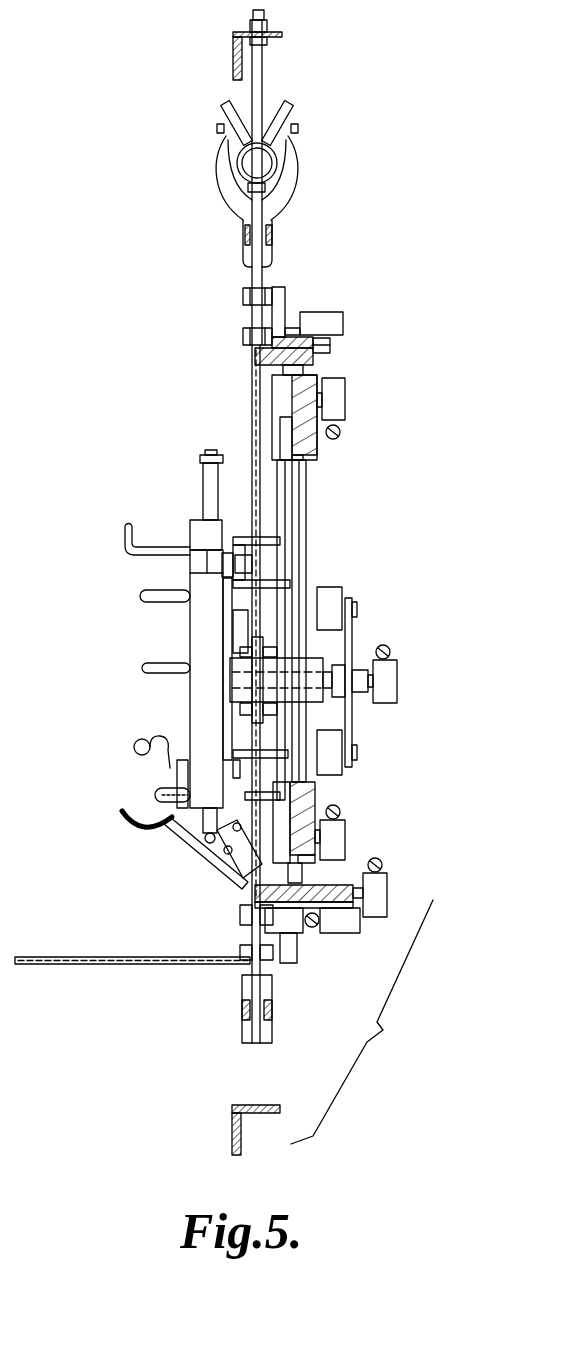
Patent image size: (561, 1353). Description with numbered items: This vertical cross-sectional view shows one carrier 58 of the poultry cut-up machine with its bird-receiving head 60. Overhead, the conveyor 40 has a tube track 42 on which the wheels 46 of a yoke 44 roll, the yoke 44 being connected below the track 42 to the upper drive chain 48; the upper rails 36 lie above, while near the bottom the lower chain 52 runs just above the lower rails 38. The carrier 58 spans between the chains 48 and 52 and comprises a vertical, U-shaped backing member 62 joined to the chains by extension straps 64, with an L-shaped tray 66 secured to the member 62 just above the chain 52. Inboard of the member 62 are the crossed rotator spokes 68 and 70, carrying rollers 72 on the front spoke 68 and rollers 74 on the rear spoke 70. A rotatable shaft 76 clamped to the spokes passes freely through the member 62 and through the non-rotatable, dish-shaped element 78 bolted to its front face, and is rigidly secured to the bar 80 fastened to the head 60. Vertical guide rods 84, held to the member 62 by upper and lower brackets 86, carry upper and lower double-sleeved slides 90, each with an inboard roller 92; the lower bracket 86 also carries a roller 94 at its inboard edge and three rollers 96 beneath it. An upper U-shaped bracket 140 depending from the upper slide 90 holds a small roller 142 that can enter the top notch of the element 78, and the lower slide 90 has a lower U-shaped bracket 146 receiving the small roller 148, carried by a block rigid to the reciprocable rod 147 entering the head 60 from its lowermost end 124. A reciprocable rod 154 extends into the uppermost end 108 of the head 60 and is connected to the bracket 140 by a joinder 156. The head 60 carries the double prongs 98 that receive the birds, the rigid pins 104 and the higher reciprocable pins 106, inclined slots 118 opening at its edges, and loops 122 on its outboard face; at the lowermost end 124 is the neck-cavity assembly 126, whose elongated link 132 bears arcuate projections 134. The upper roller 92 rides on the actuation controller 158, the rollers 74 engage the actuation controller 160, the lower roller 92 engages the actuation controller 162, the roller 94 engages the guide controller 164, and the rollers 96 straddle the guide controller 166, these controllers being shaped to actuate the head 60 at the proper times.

The upper longitudinal rails 36 is at (233, 45).
The lower longitudinal rails 38 is at (232, 1125).
The overhead conveyor 40 is at (318, 143).
The tube track 42 is at (238, 158).
The yoke 44 is at (288, 193).
The wheels 46 is at (240, 112).
The upper drive chain 48 is at (243, 237).
The lower chain 52 is at (242, 1012).
The carrier 58 is at (243, 367).
The bird-receiving head 60 is at (180, 651).
The backing member 62 is at (277, 307).
The extension straps 64 is at (267, 280).
The tray 66 is at (100, 965).
The front rotator spoke 68 is at (353, 622).
The rear rotator spoke 70 is at (355, 705).
The rollers 72 is at (340, 588).
The rollers 74 is at (397, 690).
The rotatable shaft 76 is at (330, 667).
The dish-shaped element 78 is at (248, 620).
The elongated bar 80 is at (225, 718).
The vertical guide rods 84 is at (299, 477).
The brackets 86 is at (315, 363).
The double-sleeved slides 90 is at (275, 402).
The roller 92 is at (343, 390).
The roller 94 is at (377, 917).
The rollers 96 is at (293, 933).
The double prongs 98 is at (125, 542).
The rigid pins 104 is at (142, 668).
The reciprocable pins 106 is at (140, 598).
The uppermost end 108 is at (190, 522).
The inclined slots 118 is at (203, 755).
The loop 122 is at (137, 748).
The lowermost end 124 is at (200, 815).
The assembly 126 is at (206, 883).
The elongated link 132 is at (192, 838).
The arcuate projections 134 is at (132, 826).
The upper U-shaped bracket 140 is at (285, 507).
The upper roller 142 is at (229, 555).
The lower U-shaped bracket 146 is at (287, 763).
The reciprocable rod 147 is at (203, 828).
The lower roller 148 is at (223, 718).
The reciprocable rod 154 is at (203, 478).
The joinder 156 is at (203, 457).
The actuation controller 158 is at (342, 430).
The actuation controller 160 is at (387, 648).
The actuation controller 162 is at (342, 810).
The guide controller 164 is at (382, 866).
The guide controller 166 is at (313, 923).